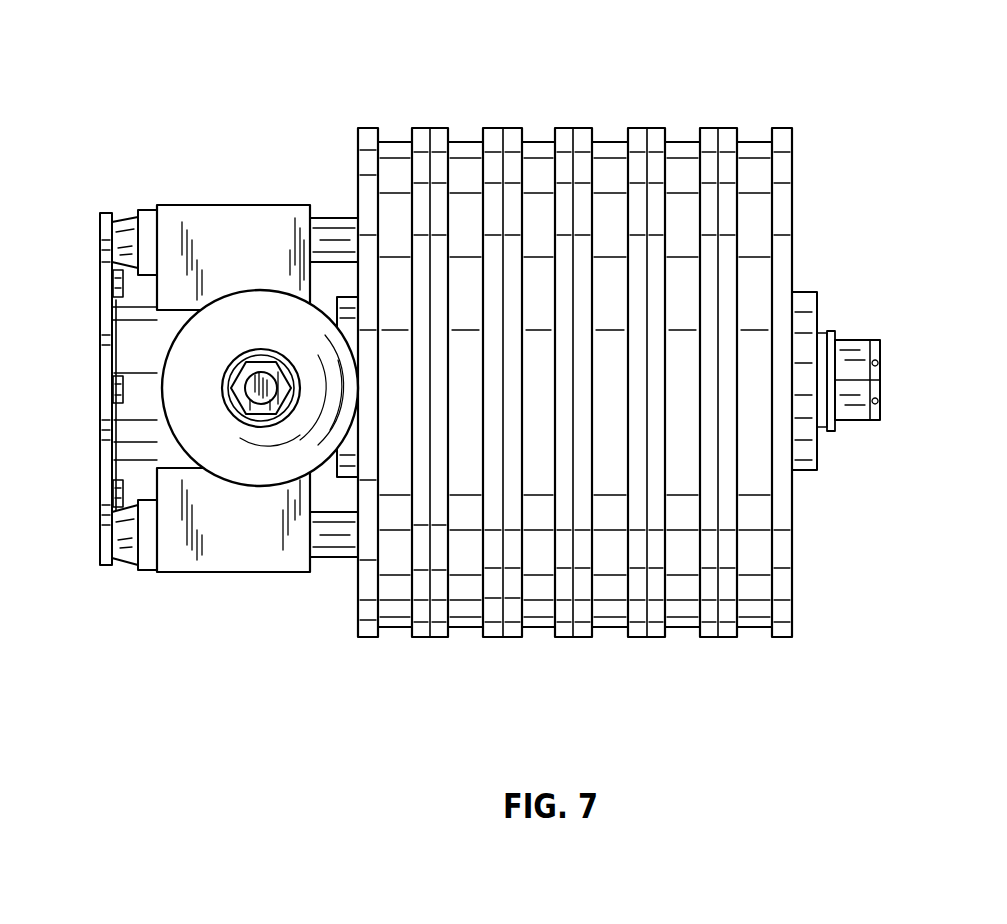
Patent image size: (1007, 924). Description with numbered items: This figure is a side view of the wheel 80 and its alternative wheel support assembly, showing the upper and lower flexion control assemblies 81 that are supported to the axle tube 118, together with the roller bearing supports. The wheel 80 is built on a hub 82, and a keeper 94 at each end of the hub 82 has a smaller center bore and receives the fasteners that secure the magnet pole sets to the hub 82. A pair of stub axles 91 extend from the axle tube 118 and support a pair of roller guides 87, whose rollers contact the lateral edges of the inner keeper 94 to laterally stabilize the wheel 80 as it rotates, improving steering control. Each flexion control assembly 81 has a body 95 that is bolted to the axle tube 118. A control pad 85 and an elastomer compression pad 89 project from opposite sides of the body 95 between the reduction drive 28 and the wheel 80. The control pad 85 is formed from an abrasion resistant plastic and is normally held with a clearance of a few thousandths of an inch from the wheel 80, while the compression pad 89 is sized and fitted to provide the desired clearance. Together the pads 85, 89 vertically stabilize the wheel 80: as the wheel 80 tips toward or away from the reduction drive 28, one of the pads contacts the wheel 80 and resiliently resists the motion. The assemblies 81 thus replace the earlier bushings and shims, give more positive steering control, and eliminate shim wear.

The reduction drive 28 is at (100, 257).
The wheel 80 is at (792, 128).
The flexion control assembly 81 is at (217, 203).
The hub 82 is at (805, 318).
The control pad 85 is at (332, 238).
The roller guide 87 is at (267, 443).
The compression pad 89 is at (132, 218).
The stub axle 91 is at (262, 388).
The keeper 94 is at (365, 155).
The body 95 is at (255, 203).
The axle tube 118 is at (145, 341).